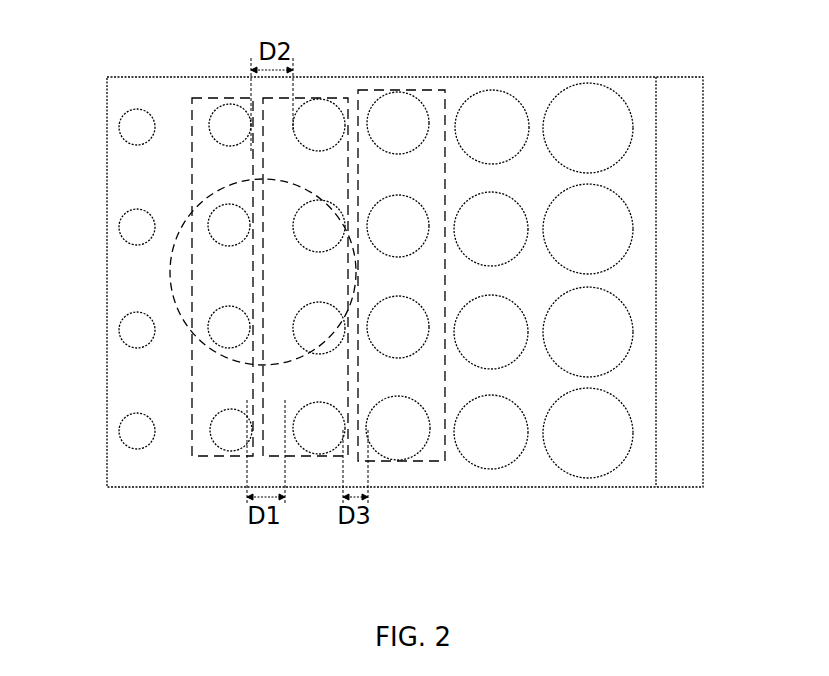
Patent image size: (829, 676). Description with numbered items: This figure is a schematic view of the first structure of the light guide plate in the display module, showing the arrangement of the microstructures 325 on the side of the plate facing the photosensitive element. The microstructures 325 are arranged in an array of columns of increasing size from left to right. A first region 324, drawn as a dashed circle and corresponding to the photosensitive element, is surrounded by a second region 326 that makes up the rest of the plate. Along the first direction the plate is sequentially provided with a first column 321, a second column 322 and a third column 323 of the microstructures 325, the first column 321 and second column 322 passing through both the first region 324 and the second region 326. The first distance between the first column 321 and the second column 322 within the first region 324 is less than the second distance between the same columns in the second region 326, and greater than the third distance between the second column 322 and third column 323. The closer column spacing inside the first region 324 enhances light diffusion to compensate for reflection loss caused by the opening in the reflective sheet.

The first column of the microstructures 321 is at (223, 99).
The second column of the microstructures 322 is at (338, 99).
The third column of the microstructures 323 is at (398, 90).
The first region 324 is at (172, 274).
The microstructures 325 is at (138, 130).
The second region 326 is at (143, 190).